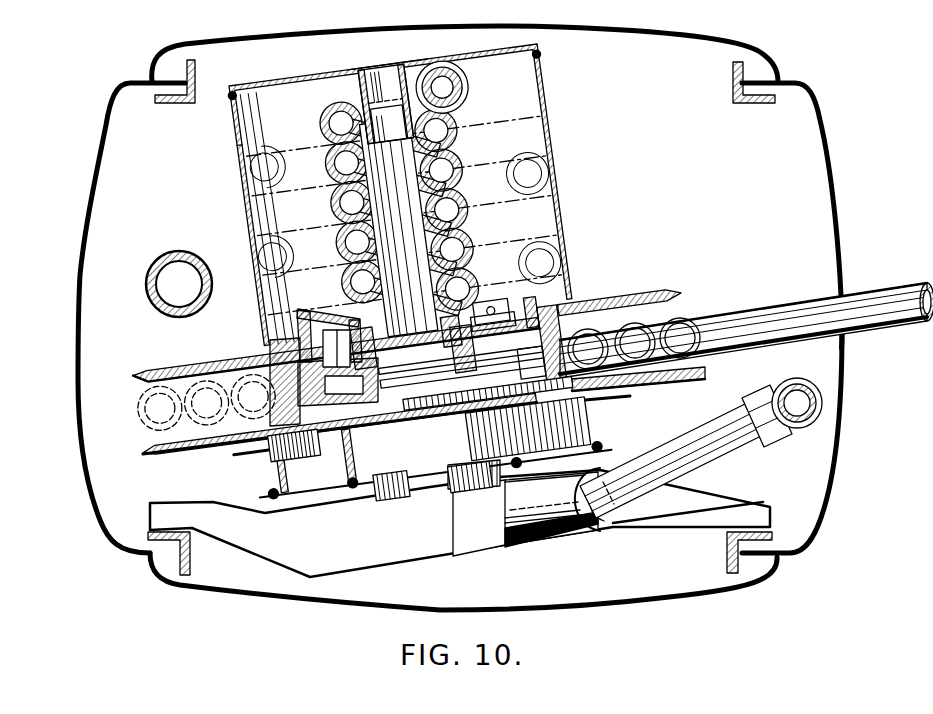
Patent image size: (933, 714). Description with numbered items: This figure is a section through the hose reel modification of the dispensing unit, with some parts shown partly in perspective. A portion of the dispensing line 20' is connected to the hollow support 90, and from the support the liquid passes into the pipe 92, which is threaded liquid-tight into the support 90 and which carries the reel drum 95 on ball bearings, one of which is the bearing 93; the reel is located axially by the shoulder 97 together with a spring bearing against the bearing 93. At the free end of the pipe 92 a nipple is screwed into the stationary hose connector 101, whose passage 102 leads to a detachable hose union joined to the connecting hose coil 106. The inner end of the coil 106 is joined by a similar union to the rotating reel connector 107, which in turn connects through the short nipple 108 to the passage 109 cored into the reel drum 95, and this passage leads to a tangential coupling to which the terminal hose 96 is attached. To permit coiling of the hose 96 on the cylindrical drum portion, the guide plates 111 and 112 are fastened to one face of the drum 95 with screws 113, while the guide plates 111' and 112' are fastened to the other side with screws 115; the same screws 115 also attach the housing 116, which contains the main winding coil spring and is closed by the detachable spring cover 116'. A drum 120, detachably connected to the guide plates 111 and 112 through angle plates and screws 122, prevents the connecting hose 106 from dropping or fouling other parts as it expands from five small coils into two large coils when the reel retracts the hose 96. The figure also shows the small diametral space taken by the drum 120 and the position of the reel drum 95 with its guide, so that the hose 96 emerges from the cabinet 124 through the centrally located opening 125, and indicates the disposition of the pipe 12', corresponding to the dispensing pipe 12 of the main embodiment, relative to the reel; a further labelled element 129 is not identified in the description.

The cabinet 124 is at (612, 30).
The casing side wall 129 is at (843, 348).
The centrally located opening 125 is at (398, 60).
The passage 102 is at (397, 53).
The stationary hose connector 101 is at (366, 86).
The connecting hose coil 106 is at (458, 128).
The drum 120 is at (242, 147).
The pipe 12' is at (179, 275).
The rotating reel connector 107 is at (302, 309).
The short nipple 108 is at (333, 328).
The pipe 92 is at (396, 312).
The ball bearing 93 is at (396, 336).
The shoulder 97 is at (428, 318).
The dispensing pipe 12 is at (501, 307).
The screws 113 is at (552, 300).
The screws 122 is at (566, 302).
The guide plate 112 is at (620, 295).
The reel drum 95 is at (582, 313).
The terminal hose 96 is at (704, 322).
The guide plate 111 is at (336, 350).
The screws 115 is at (546, 364).
The passage 109 is at (338, 382).
The guide plate 111' is at (386, 434).
The housing 116 is at (416, 446).
The spring cover 116' is at (437, 481).
The guide plate 112' is at (638, 388).
The dispensing line 20' is at (701, 448).
The hollow support 90 is at (547, 548).